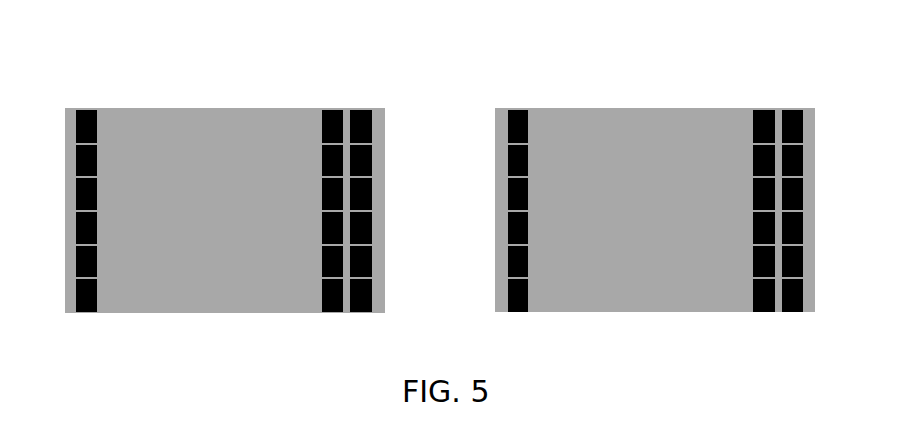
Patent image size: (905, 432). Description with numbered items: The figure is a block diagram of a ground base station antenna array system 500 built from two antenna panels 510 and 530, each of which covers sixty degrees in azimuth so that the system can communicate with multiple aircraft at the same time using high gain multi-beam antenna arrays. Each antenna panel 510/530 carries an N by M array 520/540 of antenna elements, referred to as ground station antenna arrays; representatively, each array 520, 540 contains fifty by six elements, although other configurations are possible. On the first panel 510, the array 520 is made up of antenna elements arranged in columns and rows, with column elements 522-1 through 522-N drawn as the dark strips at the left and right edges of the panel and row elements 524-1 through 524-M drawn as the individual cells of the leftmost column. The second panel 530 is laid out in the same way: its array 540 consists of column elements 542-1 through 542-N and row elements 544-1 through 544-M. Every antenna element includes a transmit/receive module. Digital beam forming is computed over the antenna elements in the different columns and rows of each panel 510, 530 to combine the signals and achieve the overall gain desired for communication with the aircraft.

The ground base station antenna array system 500 is at (443, 64).
The antenna panel 510 is at (221, 307).
The N×M array of antenna elements 520 is at (213, 276).
The antenna element 522-1 is at (95, 220).
The antenna element 522-N is at (365, 313).
The antenna element 524-1 is at (76, 292).
The antenna element 524-M is at (76, 122).
The antenna panel 530 is at (658, 307).
The N×M array of antenna elements 540 is at (641, 276).
The antenna element 542-1 is at (523, 220).
The antenna element 542-N is at (795, 313).
The antenna element 544-1 is at (508, 292).
The antenna element 544-M is at (508, 122).